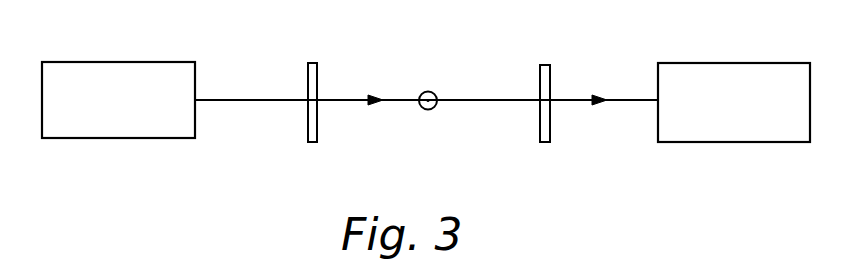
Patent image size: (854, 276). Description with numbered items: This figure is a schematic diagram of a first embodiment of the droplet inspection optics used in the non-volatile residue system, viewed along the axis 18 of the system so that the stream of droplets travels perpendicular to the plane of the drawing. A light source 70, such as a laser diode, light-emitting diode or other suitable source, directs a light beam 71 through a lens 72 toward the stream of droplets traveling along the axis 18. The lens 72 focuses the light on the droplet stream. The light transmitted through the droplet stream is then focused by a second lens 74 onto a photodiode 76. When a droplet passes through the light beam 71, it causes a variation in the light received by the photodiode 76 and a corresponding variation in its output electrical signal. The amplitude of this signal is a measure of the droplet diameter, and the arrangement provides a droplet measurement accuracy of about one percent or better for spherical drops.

The light source 70 is at (133, 62).
The light beam 71 is at (257, 99).
The lens 72 is at (313, 63).
The axis 18 is at (428, 99).
The lens 74 is at (545, 65).
The photodiode 76 is at (723, 63).